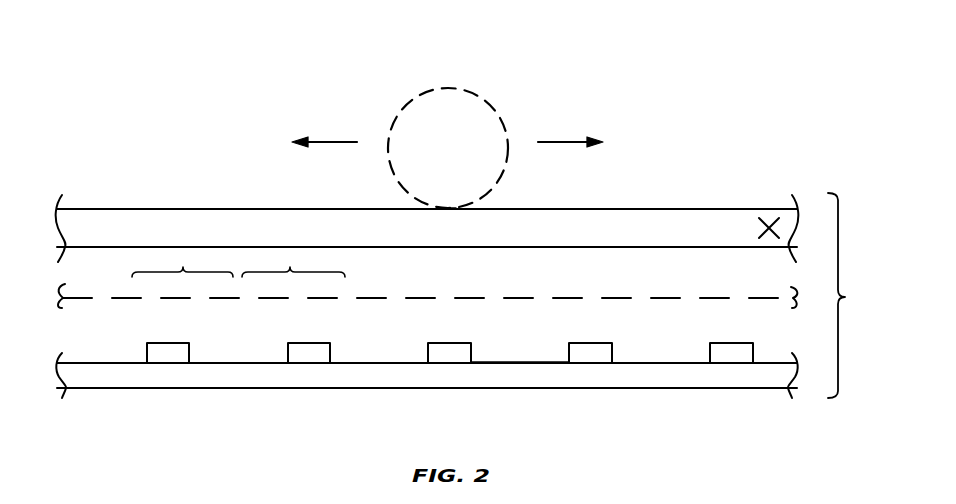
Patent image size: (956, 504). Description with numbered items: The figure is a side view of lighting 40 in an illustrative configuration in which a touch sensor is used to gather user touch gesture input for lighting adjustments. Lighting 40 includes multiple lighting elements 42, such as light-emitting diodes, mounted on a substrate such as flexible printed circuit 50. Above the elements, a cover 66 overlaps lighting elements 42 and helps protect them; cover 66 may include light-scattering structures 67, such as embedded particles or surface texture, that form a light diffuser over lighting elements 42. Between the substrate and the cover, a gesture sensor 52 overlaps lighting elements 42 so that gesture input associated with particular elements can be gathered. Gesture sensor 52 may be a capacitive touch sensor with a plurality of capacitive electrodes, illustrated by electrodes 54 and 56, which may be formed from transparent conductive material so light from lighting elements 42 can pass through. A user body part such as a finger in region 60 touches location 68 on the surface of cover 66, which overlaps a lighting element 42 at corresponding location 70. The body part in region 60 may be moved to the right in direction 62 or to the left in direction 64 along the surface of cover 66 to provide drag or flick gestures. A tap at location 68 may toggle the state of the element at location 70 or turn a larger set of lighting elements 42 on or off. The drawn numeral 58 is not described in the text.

The lighting 40 is at (851, 295).
The lighting elements 42 is at (292, 349).
The flexible printed circuit 50 is at (448, 383).
The gesture sensor 52 is at (80, 299).
The capacitive electrode 54 is at (182, 263).
The capacitive electrode 56 is at (293, 263).
The upper layer 58 is at (122, 220).
The region 60 is at (437, 88).
The direction 62 is at (568, 140).
The direction 64 is at (326, 140).
The cover 66 is at (675, 208).
The light-scattering structures 67 is at (769, 216).
The location 68 is at (450, 212).
The location 70 is at (487, 342).